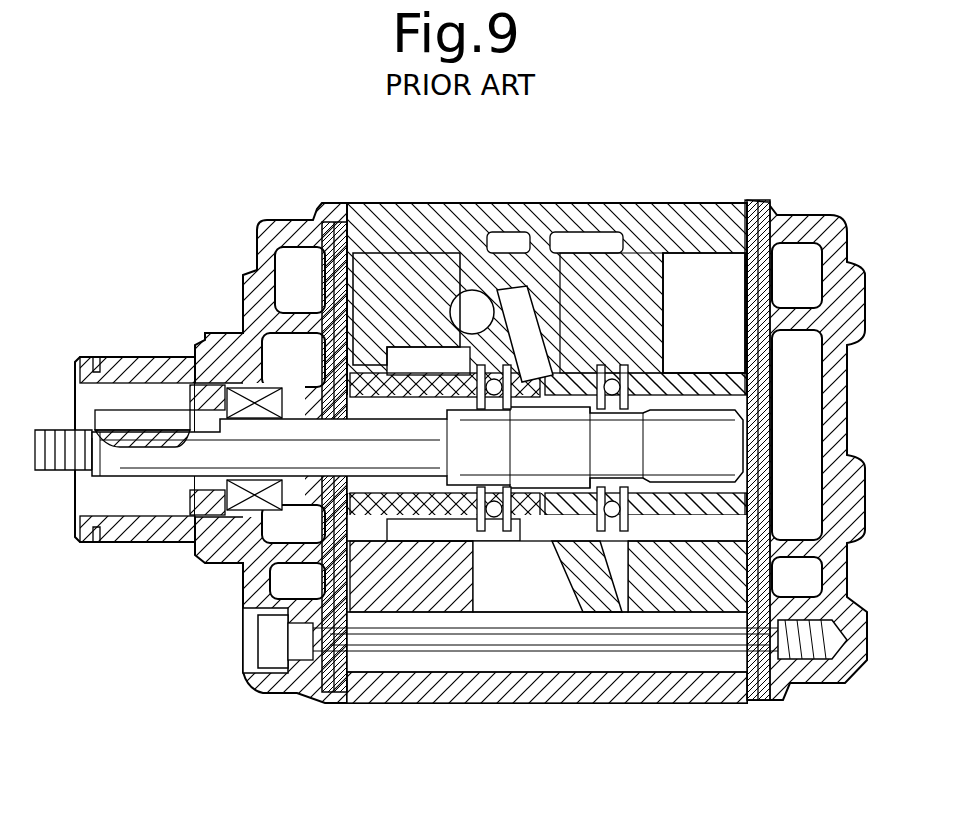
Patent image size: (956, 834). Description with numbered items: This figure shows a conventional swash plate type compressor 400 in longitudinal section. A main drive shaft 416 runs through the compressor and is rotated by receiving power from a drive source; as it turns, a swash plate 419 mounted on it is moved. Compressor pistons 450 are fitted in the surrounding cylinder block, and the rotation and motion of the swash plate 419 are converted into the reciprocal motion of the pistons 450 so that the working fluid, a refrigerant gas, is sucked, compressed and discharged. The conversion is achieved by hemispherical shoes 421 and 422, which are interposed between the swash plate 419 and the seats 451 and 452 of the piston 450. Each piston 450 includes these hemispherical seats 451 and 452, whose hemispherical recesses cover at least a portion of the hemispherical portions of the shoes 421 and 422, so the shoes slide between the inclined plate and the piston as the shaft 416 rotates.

The swash plate type compressor 400 is at (451, 451).
The main drive shaft 416 is at (148, 460).
The swash plate 419 is at (583, 590).
The hemispherical shoe 421 is at (463, 300).
The hemispherical shoe 422 is at (540, 330).
The compressor piston 450 is at (668, 299).
The hemispherical seat 451 is at (432, 300).
The hemispherical seat 452 is at (597, 293).